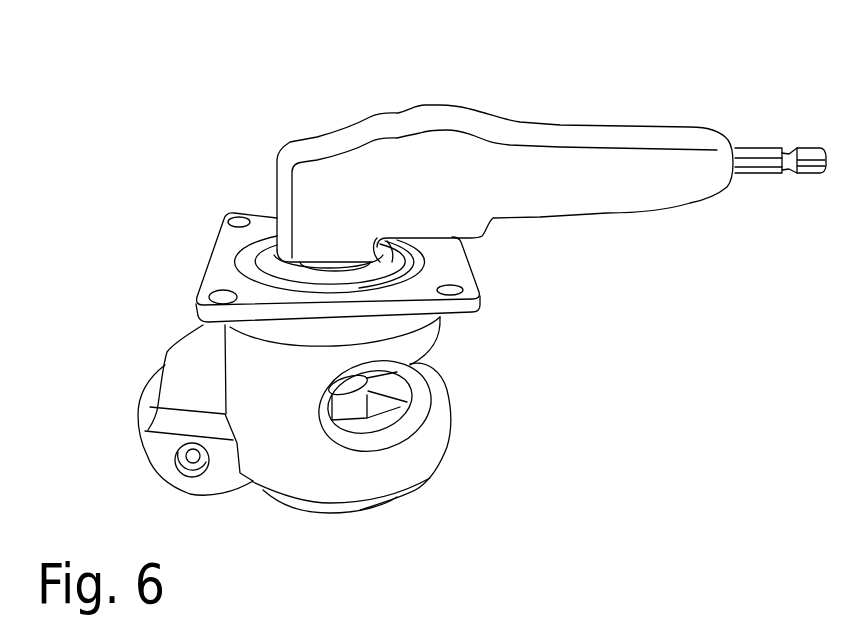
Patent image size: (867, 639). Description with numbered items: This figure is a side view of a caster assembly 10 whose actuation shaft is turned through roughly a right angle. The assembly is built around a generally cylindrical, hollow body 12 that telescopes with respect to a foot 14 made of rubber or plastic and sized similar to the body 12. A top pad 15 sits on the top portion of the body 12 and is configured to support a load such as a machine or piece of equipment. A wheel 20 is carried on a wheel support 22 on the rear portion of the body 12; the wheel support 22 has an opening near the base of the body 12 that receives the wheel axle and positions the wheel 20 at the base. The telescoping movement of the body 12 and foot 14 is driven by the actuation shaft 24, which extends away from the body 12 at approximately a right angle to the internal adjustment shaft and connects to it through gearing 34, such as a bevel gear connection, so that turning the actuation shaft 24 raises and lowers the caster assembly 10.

The caster assembly 10 is at (250, 97).
The body 12 is at (440, 422).
The foot 14 is at (358, 512).
The top pad 15 is at (462, 270).
The wheel 20 is at (153, 407).
The wheel support 22 is at (183, 342).
The actuation shaft 24 is at (762, 167).
The gearing 34 is at (398, 170).